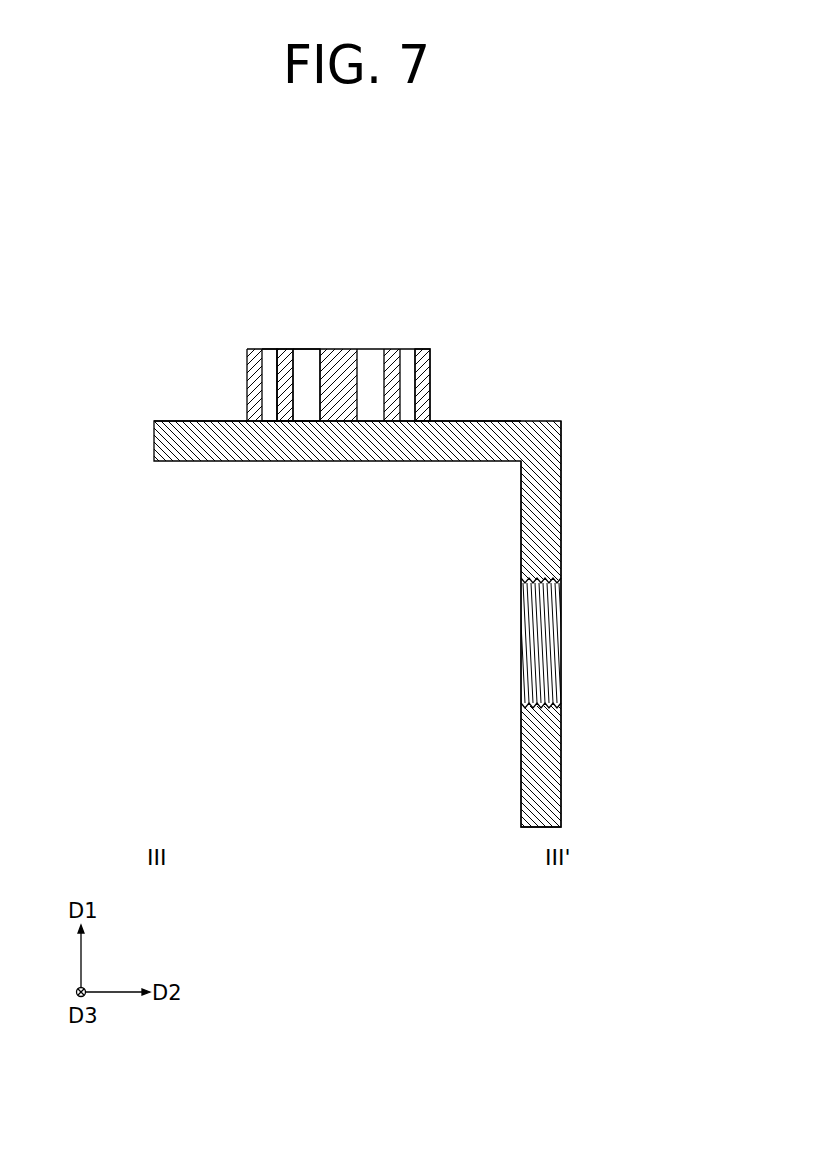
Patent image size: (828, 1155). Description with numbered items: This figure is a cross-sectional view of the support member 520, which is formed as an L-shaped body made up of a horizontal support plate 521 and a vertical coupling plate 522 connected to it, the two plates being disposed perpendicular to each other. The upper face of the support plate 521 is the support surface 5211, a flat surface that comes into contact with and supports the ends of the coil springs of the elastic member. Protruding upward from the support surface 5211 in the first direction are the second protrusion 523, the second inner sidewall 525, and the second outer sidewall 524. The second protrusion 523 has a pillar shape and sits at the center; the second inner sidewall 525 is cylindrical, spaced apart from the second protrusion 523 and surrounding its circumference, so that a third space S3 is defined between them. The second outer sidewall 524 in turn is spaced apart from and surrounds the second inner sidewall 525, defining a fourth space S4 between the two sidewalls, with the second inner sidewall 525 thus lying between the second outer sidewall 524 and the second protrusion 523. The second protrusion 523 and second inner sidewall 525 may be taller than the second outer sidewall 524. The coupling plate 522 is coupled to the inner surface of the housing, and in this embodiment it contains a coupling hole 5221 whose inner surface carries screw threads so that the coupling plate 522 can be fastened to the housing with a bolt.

The support member 520 is at (538, 245).
The support plate 521 is at (168, 437).
The support surface 5211 is at (185, 421).
The coupling plate 522 is at (545, 763).
The coupling hole 5221 is at (565, 651).
The second protrusion 523 is at (337, 363).
The second outer sidewall 524 is at (420, 357).
The second inner sidewall 525 is at (284, 357).
The third space S3 is at (306, 386).
The fourth space S4 is at (271, 360).